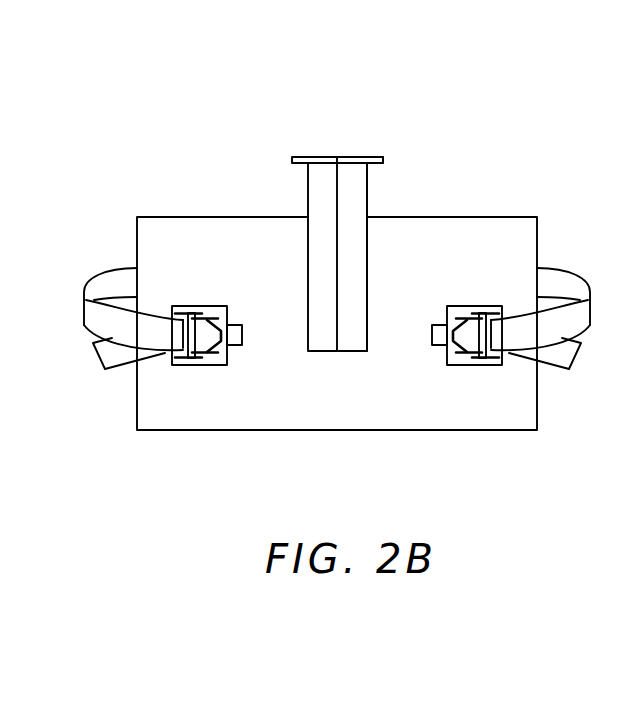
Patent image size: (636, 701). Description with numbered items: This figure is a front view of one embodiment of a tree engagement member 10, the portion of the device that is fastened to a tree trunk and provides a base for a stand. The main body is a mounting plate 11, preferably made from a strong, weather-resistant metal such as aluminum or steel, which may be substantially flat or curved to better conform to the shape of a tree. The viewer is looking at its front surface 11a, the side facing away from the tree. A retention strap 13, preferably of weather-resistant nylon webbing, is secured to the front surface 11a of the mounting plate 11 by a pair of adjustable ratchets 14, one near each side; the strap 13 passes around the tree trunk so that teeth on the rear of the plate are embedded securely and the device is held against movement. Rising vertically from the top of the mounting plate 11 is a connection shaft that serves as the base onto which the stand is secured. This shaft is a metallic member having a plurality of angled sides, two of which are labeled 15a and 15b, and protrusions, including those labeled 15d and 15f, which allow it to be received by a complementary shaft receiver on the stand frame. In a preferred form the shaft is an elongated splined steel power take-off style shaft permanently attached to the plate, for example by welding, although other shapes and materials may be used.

The tree engagement member 10 is at (86, 143).
The mounting plate 11 is at (540, 388).
The front surface of mounting plate 11a is at (352, 401).
The retention strap 13 is at (88, 330).
The adjustable ratchet 14 is at (208, 362).
The angled side of connection shaft 15a is at (322, 188).
The angled side of connection shaft 15b is at (360, 197).
The protrusion of connection shaft 15d is at (300, 162).
The protrusion of connection shaft 15f is at (382, 158).